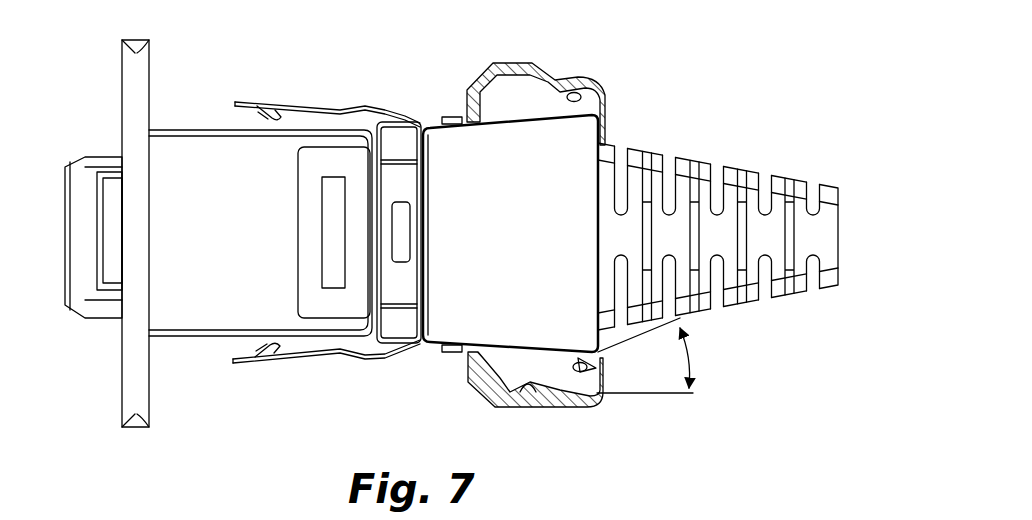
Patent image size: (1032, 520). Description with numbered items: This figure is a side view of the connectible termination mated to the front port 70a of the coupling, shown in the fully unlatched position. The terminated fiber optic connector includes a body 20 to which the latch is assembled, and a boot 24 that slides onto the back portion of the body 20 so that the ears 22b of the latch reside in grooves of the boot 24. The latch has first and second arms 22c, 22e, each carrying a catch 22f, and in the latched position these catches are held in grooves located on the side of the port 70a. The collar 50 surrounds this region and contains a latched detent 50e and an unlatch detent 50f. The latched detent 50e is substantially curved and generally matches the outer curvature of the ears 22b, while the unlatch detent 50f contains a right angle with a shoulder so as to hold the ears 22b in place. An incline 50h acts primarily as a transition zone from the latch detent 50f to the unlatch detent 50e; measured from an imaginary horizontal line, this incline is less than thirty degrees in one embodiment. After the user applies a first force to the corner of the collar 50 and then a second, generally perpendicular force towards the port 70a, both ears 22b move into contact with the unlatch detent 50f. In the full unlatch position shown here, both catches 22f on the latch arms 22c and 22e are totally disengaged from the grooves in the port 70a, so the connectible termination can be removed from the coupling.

The front port 70a is at (188, 137).
The body 20 is at (393, 128).
The ears 22b is at (573, 372).
The first arm 22c is at (302, 108).
The second arm 22e is at (312, 355).
The catch 22f is at (260, 112).
The boot 24 is at (825, 217).
The collar 50 is at (545, 244).
The latched detent 50e is at (503, 82).
The unlatch detent 50f is at (572, 95).
The incline 50h is at (528, 392).